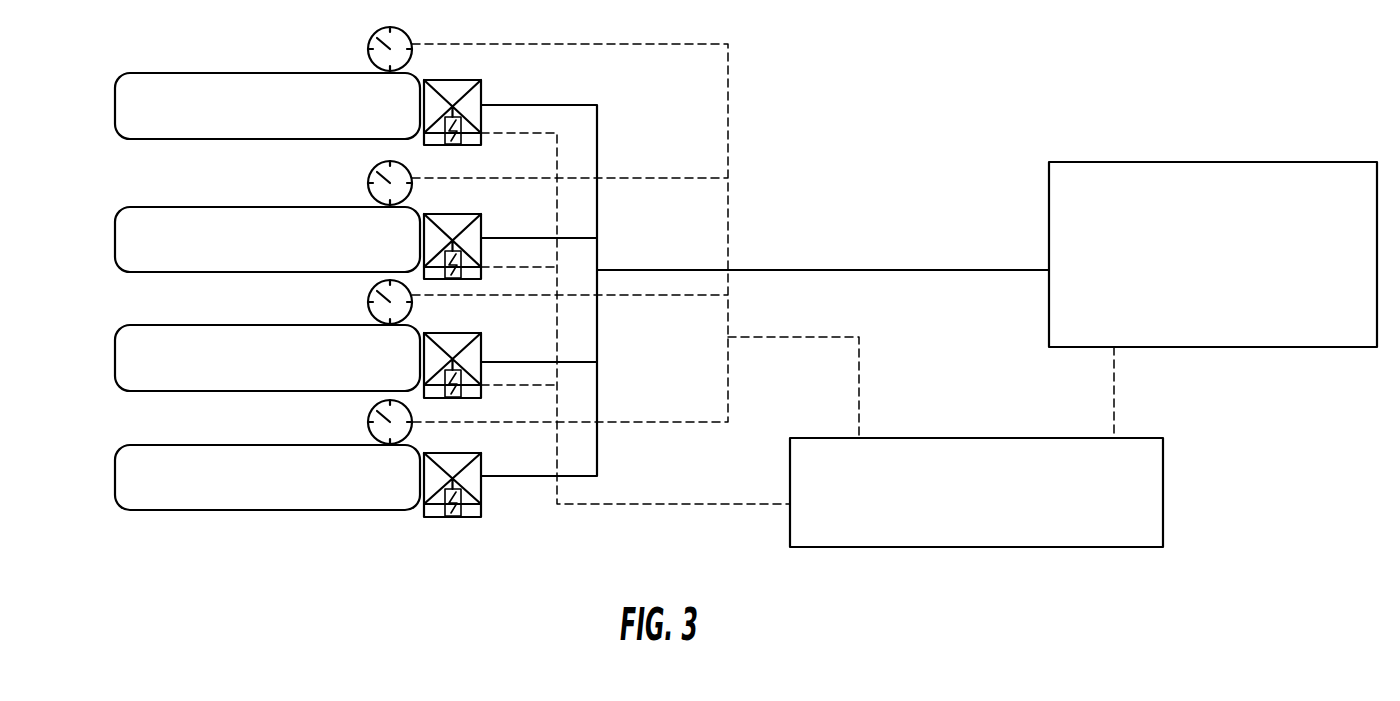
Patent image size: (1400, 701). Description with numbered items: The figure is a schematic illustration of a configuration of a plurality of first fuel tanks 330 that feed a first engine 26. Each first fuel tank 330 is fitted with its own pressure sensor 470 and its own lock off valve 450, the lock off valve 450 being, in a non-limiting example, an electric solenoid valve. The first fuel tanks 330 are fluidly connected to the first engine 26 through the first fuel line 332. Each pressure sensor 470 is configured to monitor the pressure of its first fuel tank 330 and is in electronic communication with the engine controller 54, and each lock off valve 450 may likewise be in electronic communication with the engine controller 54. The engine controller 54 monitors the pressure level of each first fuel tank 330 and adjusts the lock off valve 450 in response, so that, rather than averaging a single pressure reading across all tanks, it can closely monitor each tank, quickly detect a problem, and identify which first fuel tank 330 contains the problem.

The first fuel tank 330 is at (128, 73).
The pressure sensor 470 is at (369, 45).
The lock off valve 450 is at (453, 145).
The first fuel line 332 is at (916, 270).
The first engine 26 is at (1231, 347).
The engine controller 54 is at (1075, 547).